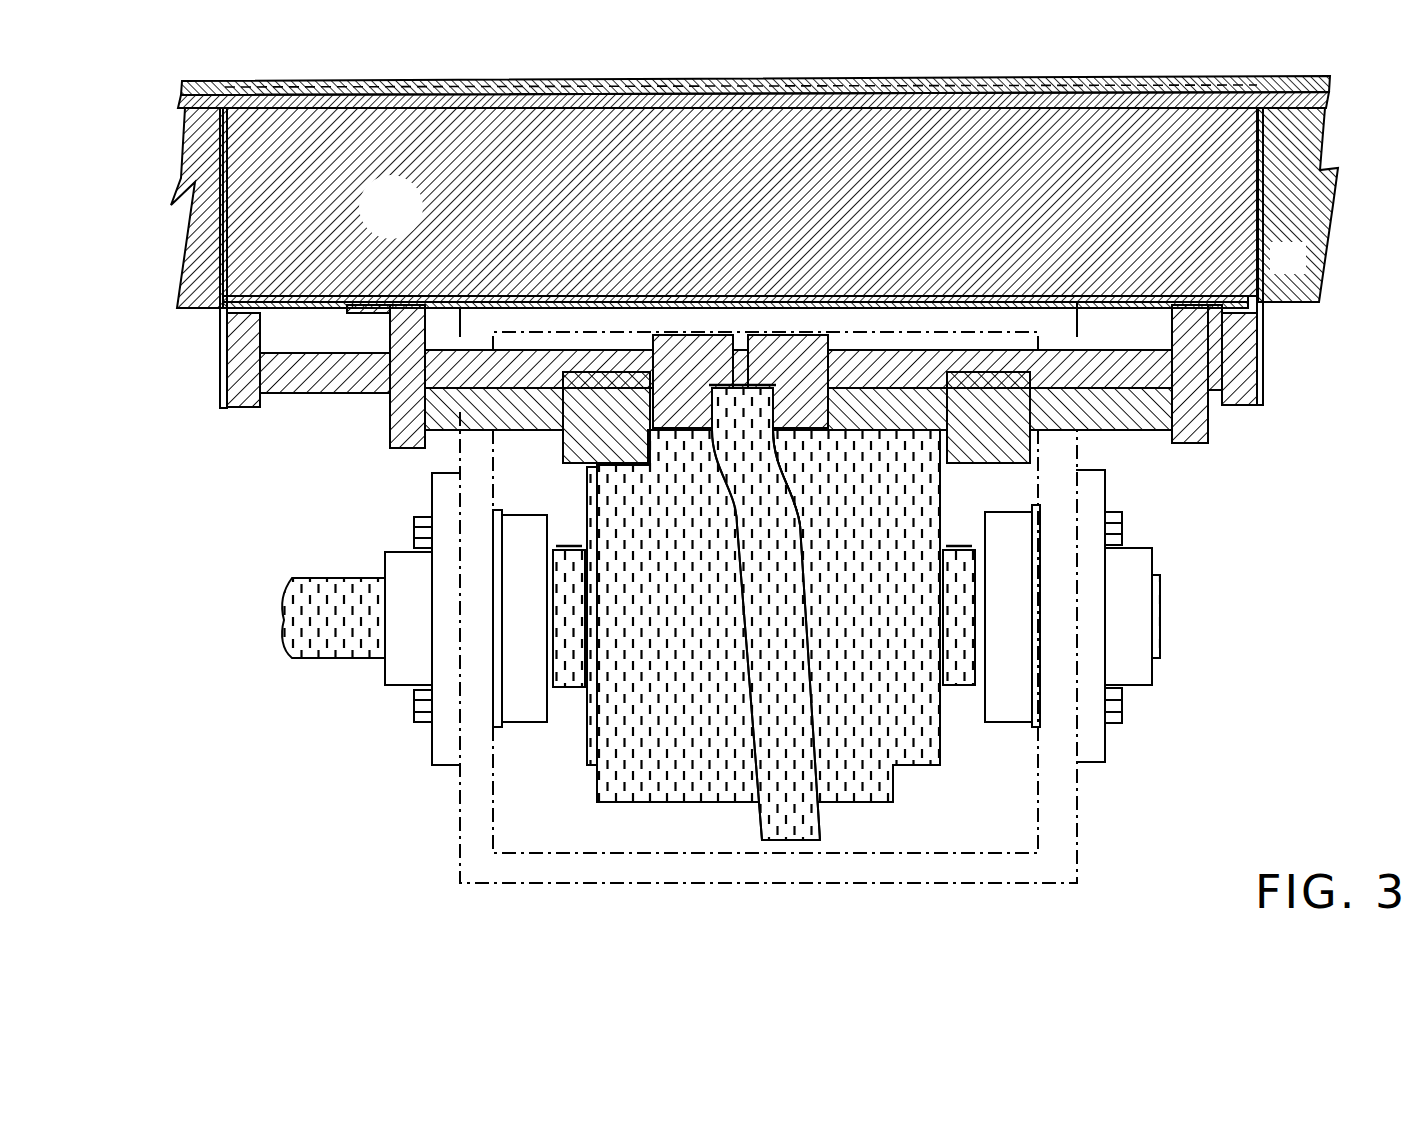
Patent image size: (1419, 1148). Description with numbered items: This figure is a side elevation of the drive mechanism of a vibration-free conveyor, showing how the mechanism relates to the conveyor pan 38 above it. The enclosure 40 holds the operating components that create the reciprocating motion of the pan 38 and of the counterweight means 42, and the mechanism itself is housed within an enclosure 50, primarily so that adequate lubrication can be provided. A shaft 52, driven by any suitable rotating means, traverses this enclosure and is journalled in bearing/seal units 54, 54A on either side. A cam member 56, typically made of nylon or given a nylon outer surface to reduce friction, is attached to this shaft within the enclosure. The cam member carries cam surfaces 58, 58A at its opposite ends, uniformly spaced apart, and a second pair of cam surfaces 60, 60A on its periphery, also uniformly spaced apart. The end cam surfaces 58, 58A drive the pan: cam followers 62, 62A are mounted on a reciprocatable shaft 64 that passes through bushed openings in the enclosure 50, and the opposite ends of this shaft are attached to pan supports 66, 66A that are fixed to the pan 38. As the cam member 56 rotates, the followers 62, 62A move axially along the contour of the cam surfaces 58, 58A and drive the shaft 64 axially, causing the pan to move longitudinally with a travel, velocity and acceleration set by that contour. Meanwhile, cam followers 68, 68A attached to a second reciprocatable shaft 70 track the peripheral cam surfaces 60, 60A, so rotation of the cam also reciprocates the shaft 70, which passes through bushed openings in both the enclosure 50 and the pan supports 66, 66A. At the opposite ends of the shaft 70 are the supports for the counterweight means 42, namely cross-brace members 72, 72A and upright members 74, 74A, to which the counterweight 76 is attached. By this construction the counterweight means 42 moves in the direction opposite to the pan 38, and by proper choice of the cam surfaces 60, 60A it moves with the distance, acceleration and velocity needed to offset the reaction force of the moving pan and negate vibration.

The conveyor pan 38 is at (1274, 272).
The enclosure 40 is at (524, 831).
The counterweight means 42 is at (214, 365).
The enclosure 50 is at (1077, 841).
The shaft 52 is at (310, 658).
The bearing/seal unit 54 is at (400, 686).
The bearing/seal unit 54A is at (1136, 688).
The cam member 56 is at (641, 808).
The cam surface 58 is at (597, 466).
The cam surface 58A is at (875, 595).
The cam surface 60 is at (760, 750).
The cam surface 60A is at (815, 755).
The cam follower 62 is at (569, 548).
The cam follower 62A is at (829, 368).
The reciprocatable shaft 64 is at (653, 342).
The pan support 66 is at (390, 418).
The pan support 66A is at (1210, 430).
The cam follower 68 is at (563, 372).
The cam follower 68A is at (1032, 433).
The reciprocatable shaft 70 is at (290, 395).
The cross-brace member 72 is at (243, 410).
The cross-brace member 72A is at (1242, 408).
The upright member 74 is at (220, 328).
The upright member 74A is at (1263, 333).
The counterweight 76 is at (376, 222).